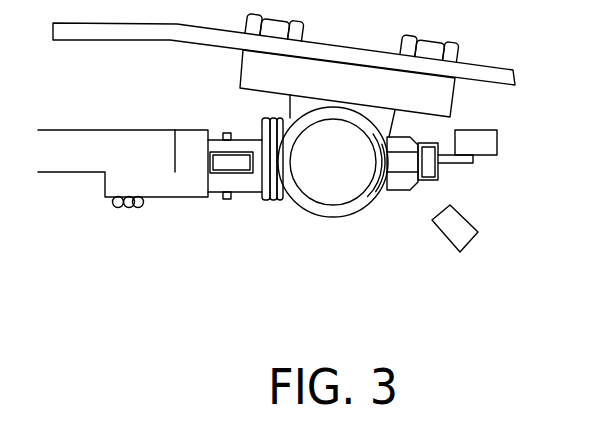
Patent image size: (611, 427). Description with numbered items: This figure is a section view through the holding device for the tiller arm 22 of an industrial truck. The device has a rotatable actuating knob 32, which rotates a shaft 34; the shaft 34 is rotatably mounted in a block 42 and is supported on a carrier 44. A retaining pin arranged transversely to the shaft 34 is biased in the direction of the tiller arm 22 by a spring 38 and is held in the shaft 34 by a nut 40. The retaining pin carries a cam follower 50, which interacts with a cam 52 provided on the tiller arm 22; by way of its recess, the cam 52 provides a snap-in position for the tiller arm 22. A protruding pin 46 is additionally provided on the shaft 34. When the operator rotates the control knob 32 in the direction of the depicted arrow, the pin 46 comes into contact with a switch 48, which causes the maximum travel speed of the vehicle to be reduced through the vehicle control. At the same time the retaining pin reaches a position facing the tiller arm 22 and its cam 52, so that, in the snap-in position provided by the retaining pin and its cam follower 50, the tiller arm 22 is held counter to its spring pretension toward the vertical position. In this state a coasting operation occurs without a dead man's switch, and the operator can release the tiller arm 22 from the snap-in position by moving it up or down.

The tiller arm 22 is at (112, 130).
The actuating knob 32 is at (328, 210).
The shaft 34 is at (300, 208).
The spring 38 is at (263, 119).
The nut 40 is at (395, 193).
The block 42 is at (437, 92).
The carrier 44 is at (438, 172).
The protruding pin 46 is at (473, 160).
The switch 48 is at (497, 143).
The cam follower 50 is at (238, 168).
The cam 52 is at (168, 190).